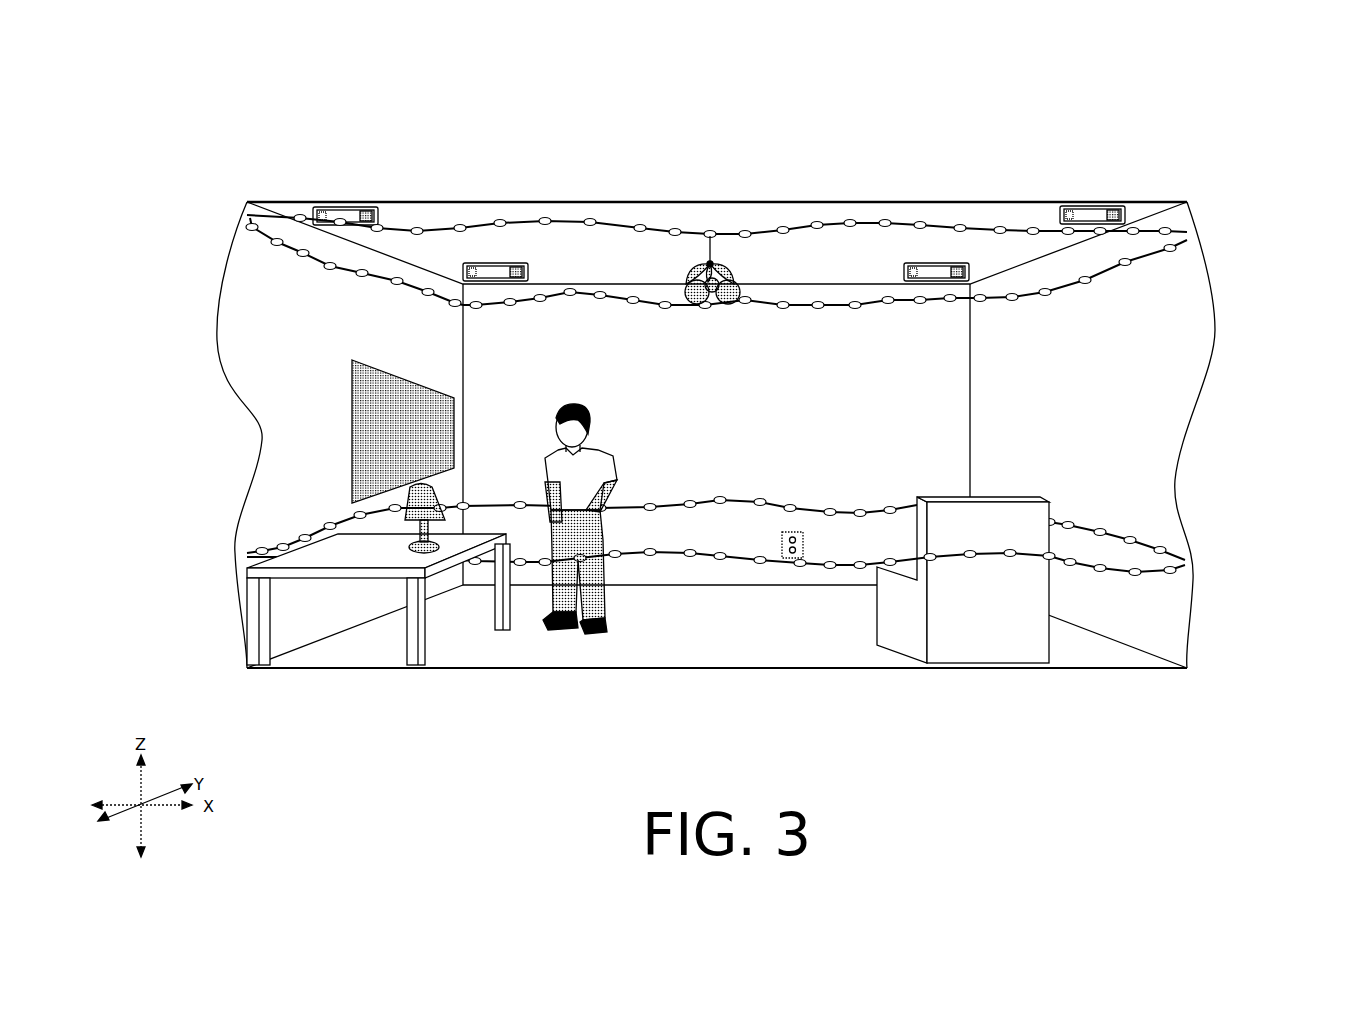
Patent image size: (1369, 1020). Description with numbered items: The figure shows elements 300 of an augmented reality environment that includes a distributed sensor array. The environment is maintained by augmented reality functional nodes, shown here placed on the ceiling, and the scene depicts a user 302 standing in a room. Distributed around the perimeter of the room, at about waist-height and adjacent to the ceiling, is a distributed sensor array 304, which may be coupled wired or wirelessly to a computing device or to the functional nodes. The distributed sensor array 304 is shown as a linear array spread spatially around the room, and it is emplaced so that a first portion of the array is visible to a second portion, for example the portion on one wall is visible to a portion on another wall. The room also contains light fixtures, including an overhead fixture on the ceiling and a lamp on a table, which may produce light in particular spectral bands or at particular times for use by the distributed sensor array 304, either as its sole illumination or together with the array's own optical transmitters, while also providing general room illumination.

The elements of the augmented reality environment 300 is at (1259, 84).
The user 302 is at (549, 393).
The distributed sensor array 304 is at (632, 294).